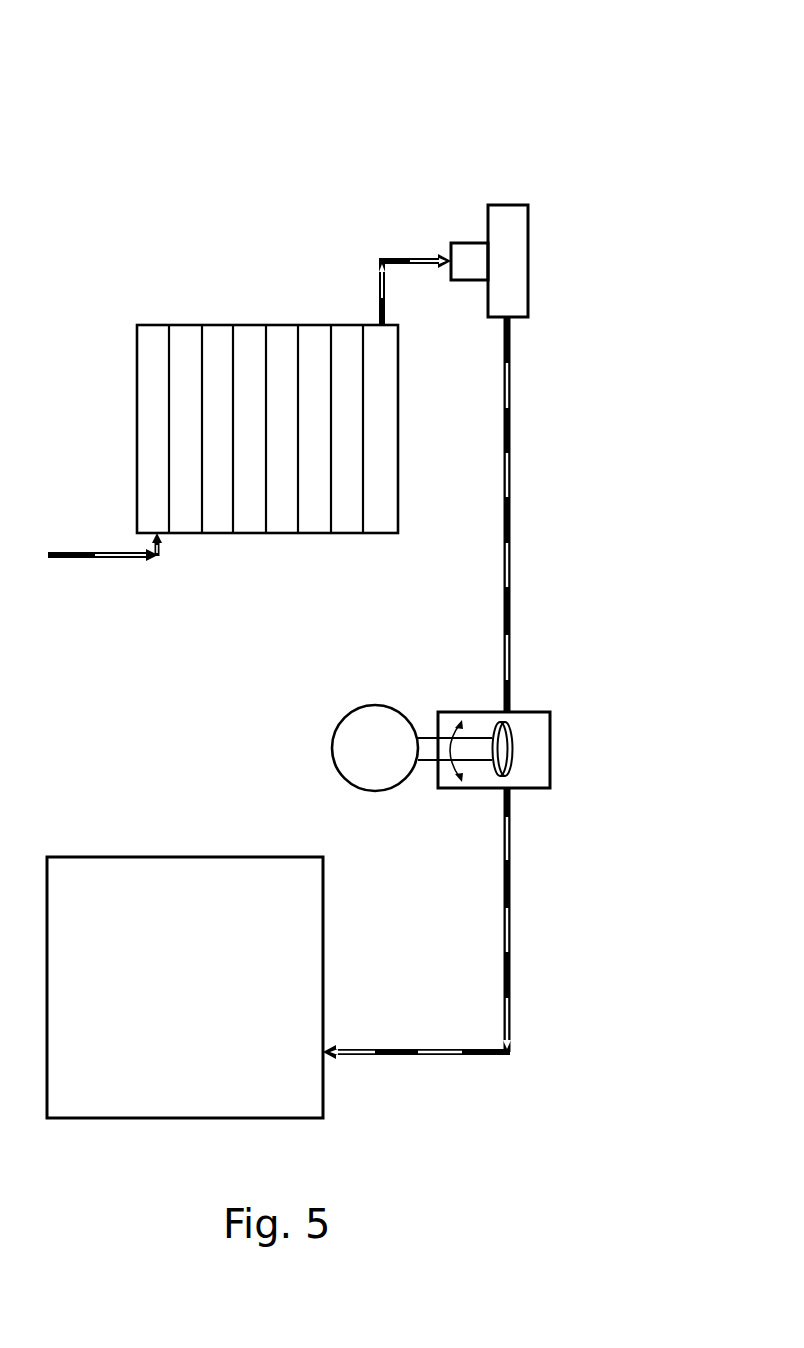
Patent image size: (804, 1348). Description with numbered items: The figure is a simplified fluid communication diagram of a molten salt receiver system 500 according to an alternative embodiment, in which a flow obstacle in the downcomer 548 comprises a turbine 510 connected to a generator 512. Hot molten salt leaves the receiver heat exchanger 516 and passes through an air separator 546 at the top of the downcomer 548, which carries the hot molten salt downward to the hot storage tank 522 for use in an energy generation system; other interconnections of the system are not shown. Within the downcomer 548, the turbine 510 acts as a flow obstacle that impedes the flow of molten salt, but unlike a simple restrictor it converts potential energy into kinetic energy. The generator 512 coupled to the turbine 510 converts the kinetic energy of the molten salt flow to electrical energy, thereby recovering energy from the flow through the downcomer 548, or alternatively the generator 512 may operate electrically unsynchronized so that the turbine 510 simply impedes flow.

The molten salt receiver system 500 is at (542, 134).
The air separator 546 is at (452, 243).
The receiver heat exchanger 516 is at (190, 325).
The downcomer 548 is at (507, 576).
The generator 512 is at (369, 706).
The turbine 510 is at (552, 745).
The hot storage tank 522 is at (187, 855).